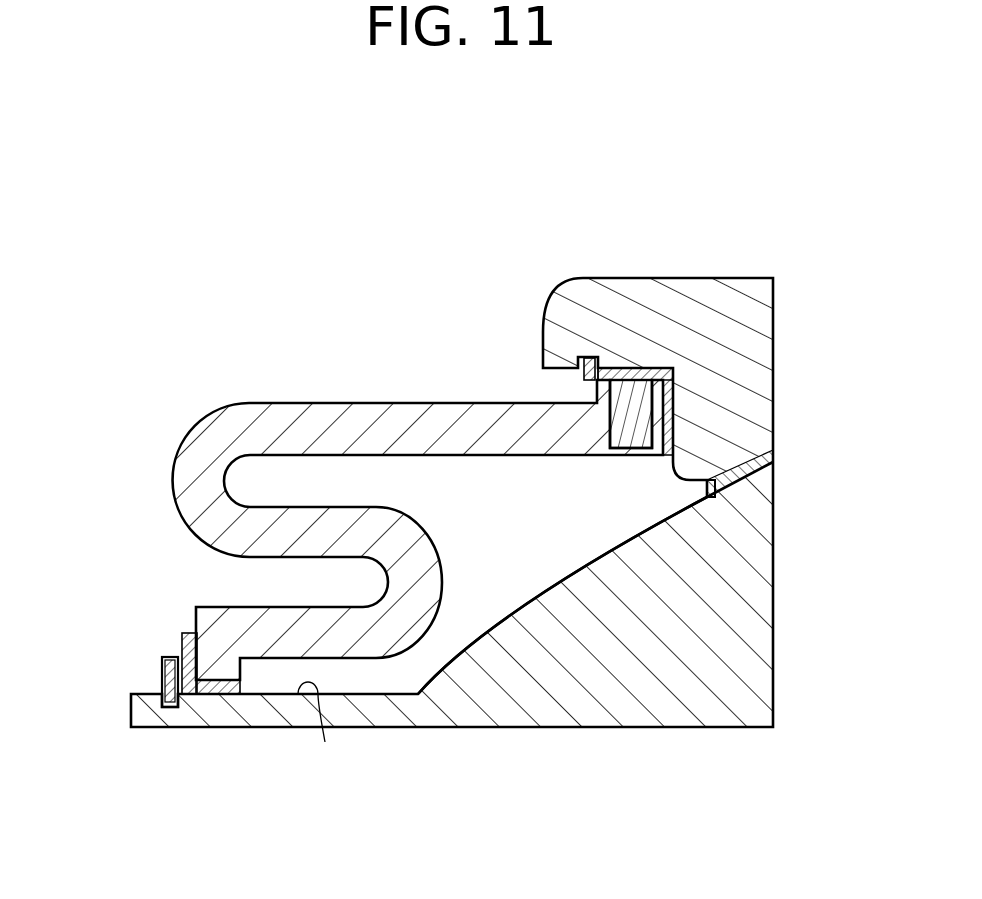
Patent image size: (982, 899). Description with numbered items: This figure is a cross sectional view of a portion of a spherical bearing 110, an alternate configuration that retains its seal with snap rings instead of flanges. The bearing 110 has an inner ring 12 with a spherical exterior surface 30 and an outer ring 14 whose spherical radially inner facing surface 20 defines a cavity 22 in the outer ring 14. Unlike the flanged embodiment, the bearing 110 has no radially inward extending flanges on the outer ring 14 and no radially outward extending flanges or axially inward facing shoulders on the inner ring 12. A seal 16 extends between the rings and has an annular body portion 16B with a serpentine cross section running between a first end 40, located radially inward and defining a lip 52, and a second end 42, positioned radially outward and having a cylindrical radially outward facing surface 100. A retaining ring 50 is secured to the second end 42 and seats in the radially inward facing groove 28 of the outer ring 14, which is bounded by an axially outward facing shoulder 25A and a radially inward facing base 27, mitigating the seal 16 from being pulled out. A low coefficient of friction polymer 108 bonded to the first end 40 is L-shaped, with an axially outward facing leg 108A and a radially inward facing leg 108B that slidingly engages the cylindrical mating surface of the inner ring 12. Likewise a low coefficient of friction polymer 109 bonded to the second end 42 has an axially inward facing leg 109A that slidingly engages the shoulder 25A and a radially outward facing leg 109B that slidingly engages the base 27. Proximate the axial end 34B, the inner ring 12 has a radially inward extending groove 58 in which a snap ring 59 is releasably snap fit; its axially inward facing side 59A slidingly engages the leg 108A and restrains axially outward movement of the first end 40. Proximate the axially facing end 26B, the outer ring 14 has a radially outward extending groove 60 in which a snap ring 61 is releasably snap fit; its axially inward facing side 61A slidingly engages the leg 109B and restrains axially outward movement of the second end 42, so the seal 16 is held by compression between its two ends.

The bearing 110 is at (130, 285).
The inner ring 12 is at (753, 668).
The outer ring 14 is at (760, 378).
The seal 16 is at (468, 485).
The annular body portion 16B is at (257, 412).
The spherical radially inner facing surface 20 is at (765, 480).
The cavity 22 is at (682, 489).
The axially outward facing shoulder 25A is at (680, 392).
The axially facing end 26B is at (543, 352).
The radially inward facing base 27 is at (700, 372).
The radially inward facing groove 28 is at (616, 358).
The spherical exterior surface 30 is at (752, 570).
The axial end 34B is at (131, 712).
The first end 40 is at (220, 627).
The second end 42 is at (590, 403).
The retaining ring 50 is at (680, 425).
The lip 52 is at (203, 608).
The radially inward extending groove 58 is at (174, 710).
The snap ring 59 is at (165, 665).
The axially inward facing side 59A is at (180, 650).
The radially outward extending groove 60 is at (587, 350).
The snap ring 61 is at (545, 368).
The axially inward facing side 61A is at (595, 388).
The cylindrical radially outward facing surface 100 is at (663, 383).
The low coefficient of friction polymer 108 is at (179, 683).
The axially outward facing leg 108A is at (182, 640).
The radially inward facing leg 108B is at (228, 682).
The low coefficient of friction polymer 109 is at (690, 417).
The axially inward facing leg 109A is at (745, 500).
The radially outward facing leg 109B is at (630, 372).